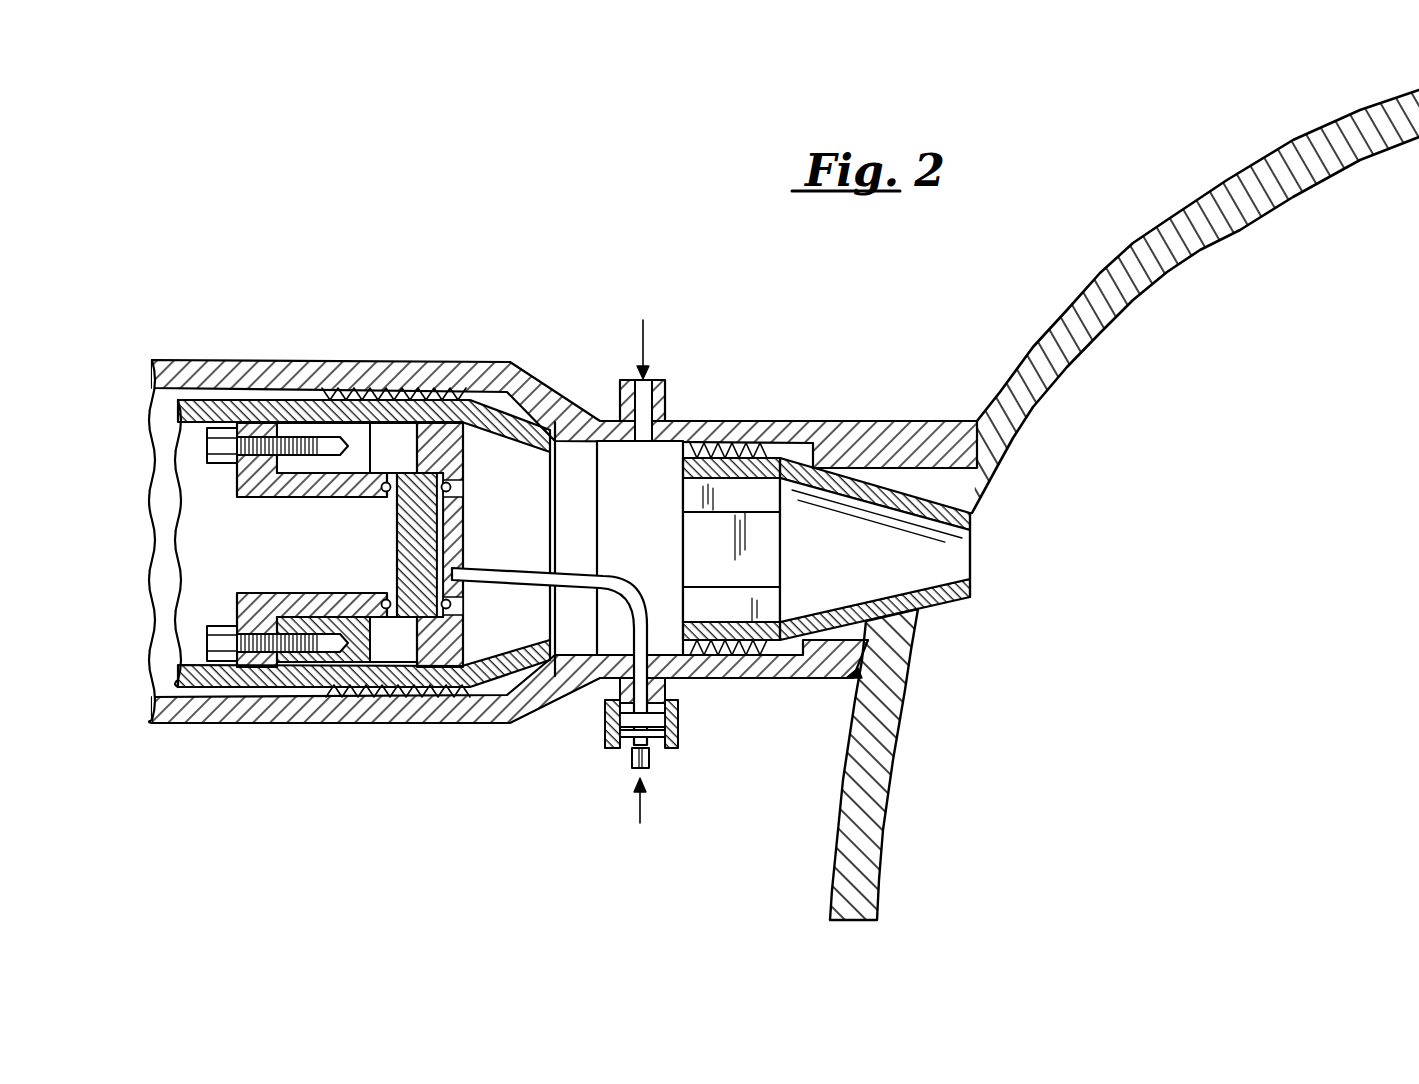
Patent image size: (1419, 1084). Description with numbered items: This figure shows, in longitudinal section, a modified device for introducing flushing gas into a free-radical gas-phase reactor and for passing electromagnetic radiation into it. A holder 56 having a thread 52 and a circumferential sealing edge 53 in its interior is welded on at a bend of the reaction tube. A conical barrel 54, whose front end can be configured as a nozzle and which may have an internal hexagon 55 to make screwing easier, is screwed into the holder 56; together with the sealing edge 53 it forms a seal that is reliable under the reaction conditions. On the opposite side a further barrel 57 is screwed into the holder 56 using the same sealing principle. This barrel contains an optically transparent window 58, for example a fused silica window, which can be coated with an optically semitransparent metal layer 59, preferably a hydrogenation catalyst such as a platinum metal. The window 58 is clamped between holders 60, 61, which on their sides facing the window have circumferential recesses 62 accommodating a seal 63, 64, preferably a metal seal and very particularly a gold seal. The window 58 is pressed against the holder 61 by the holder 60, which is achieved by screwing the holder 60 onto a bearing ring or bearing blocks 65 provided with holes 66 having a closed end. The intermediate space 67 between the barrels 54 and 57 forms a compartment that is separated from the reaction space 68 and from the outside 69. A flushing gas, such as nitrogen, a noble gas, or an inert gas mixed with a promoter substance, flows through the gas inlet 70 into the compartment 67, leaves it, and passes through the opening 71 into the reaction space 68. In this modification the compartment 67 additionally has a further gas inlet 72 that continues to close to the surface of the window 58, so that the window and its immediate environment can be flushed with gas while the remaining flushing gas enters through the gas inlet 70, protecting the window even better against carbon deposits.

The thread 52 is at (735, 445).
The circumferential sealing edge 53 is at (815, 457).
The conical barrel 54 is at (930, 598).
The internal hexagon 55 is at (772, 555).
The holder 56 is at (740, 690).
The further barrel 57 is at (470, 690).
The optically transparent window 58 is at (422, 514).
The optically semitransparent metal layer 59 is at (441, 550).
The holder 60 is at (290, 587).
The holder 61 is at (422, 454).
The circumferential recesses 62 is at (386, 492).
The seal 63 is at (448, 603).
The seal 64 is at (386, 600).
The bearing ring or bearing blocks 65 is at (333, 645).
The holes 66 is at (343, 690).
The intermediate space 67 is at (622, 564).
The reaction space 68 is at (1078, 490).
The outside 69 is at (93, 562).
The gas inlet 70 is at (645, 381).
The opening 71 is at (955, 558).
The further gas inlet 72 is at (637, 770).